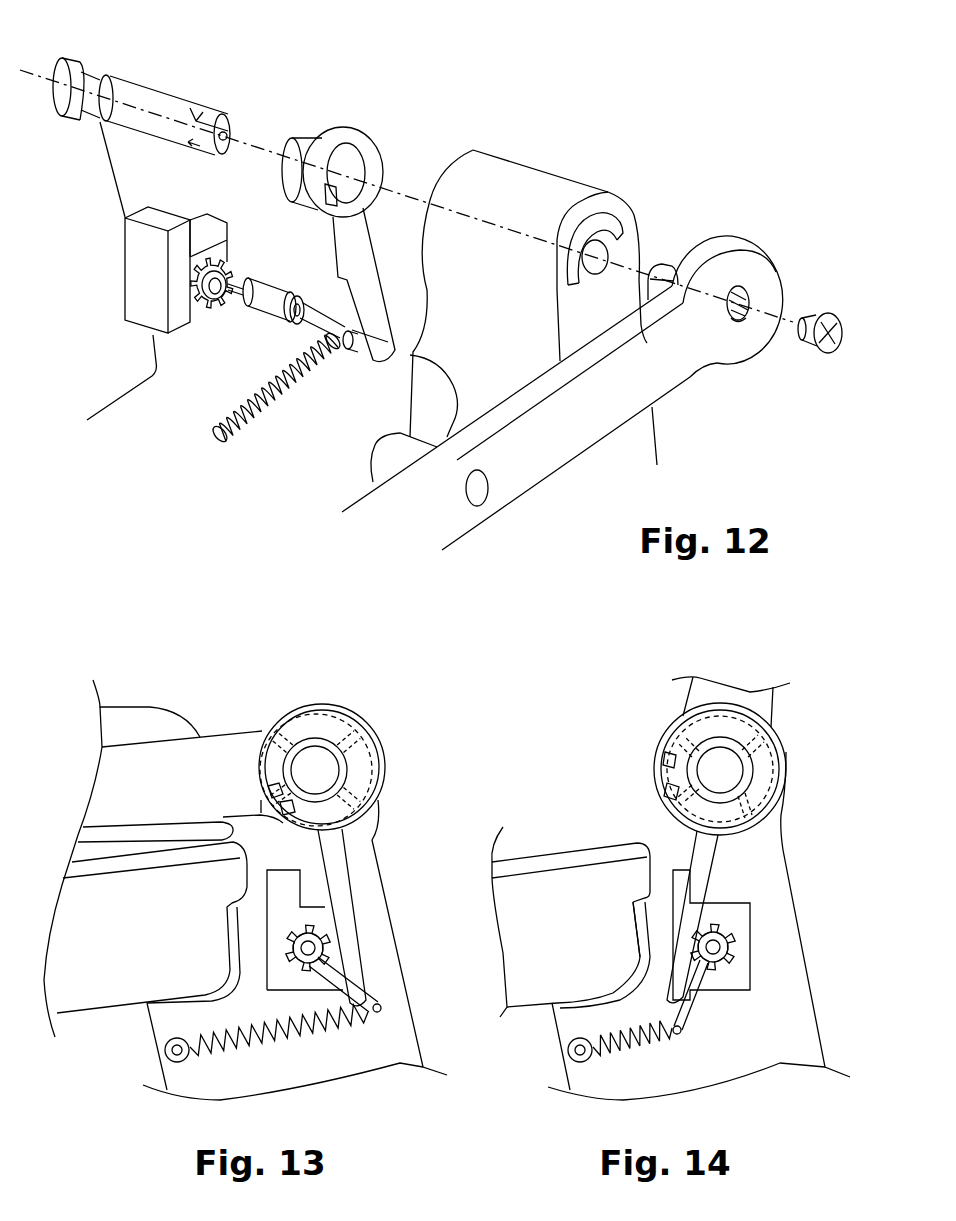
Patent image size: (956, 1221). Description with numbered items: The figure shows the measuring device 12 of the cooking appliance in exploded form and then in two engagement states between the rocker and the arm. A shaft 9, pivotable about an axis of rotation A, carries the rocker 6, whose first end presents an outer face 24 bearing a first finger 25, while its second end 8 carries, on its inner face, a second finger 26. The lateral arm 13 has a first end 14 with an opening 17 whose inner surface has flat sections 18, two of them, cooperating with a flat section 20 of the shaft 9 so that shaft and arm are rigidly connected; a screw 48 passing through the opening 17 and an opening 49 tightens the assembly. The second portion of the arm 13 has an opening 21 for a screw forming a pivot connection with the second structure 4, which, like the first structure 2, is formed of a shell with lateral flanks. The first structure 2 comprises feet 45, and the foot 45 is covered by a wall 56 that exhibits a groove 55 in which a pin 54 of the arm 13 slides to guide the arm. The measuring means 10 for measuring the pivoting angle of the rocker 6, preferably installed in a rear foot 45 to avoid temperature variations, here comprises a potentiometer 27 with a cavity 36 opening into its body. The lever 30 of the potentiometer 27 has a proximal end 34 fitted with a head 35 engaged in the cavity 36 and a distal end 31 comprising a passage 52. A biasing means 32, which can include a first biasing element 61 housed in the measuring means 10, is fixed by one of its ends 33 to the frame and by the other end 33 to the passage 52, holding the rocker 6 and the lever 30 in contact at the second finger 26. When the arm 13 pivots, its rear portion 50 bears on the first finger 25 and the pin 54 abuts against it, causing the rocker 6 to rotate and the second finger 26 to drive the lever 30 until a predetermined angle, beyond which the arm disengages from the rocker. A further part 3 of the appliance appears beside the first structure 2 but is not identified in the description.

In FIG. 12, the axis of rotation A is at (35, 70).
In FIG. 13, the first structure 2 is at (107, 970).
In FIG. 14, the first structure 2 is at (603, 877).
In FIG. 14, the housing cover part 3 is at (557, 857).
In FIG. 13, the second structure 4 is at (137, 723).
In FIG. 12, the rocker 6 is at (321, 222).
In FIG. 13, the rocker 6 is at (333, 862).
In FIG. 14, the rocker 6 is at (703, 862).
In FIG. 14, the second end 8 is at (667, 993).
In FIG. 12, the shaft 9 is at (186, 92).
In FIG. 12, the measuring means 10 is at (133, 278).
In FIG. 12, the measuring device 12 is at (341, 105).
In FIG. 12, the lateral arm 13 is at (577, 357).
In FIG. 13, the lateral arm 13 is at (274, 778).
In FIG. 14, the lateral arm 13 is at (683, 728).
In FIG. 12, the first end 14 is at (742, 272).
In FIG. 12, the opening 17 is at (760, 288).
In FIG. 12, the flat section 18 is at (745, 325).
In FIG. 12, the flat section 20 is at (215, 120).
In FIG. 12, the opening 21 is at (487, 493).
In FIG. 12, the outer face 24 is at (363, 147).
In FIG. 12, the first finger 25 is at (323, 200).
In FIG. 13, the first finger 25 is at (268, 797).
In FIG. 14, the first finger 25 is at (668, 757).
In FIG. 12, the second finger 26 is at (348, 342).
In FIG. 12, the potentiometer 27 is at (196, 269).
In FIG. 13, the potentiometer 27 is at (305, 977).
In FIG. 14, the potentiometer 27 is at (740, 943).
In FIG. 12, the lever 30 is at (256, 369).
In FIG. 13, the lever 30 is at (392, 976).
In FIG. 14, the lever 30 is at (687, 1013).
In FIG. 12, the distal end 31 is at (330, 327).
In FIG. 12, the biasing means 32 is at (240, 416).
In FIG. 12, the first biasing element 61 is at (240, 405).
In FIG. 12, the ends 33 is at (212, 438).
In FIG. 12, the proximal end 34 is at (303, 293).
In FIG. 12, the head 35 is at (240, 307).
In FIG. 12, the cavity 36 is at (183, 315).
In FIG. 12, the feet 45 is at (85, 397).
In FIG. 13, the feet 45 is at (390, 833).
In FIG. 14, the feet 45 is at (784, 870).
In FIG. 12, the screw 48 is at (833, 315).
In FIG. 12, the opening 49 is at (232, 138).
In FIG. 13, the rear portion 50 is at (289, 815).
In FIG. 14, the rear portion 50 is at (667, 783).
In FIG. 13, the passage 52 is at (382, 1010).
In FIG. 12, the pin 54 is at (667, 272).
In FIG. 12, the groove 55 is at (604, 222).
In FIG. 12, the wall 56 is at (518, 292).